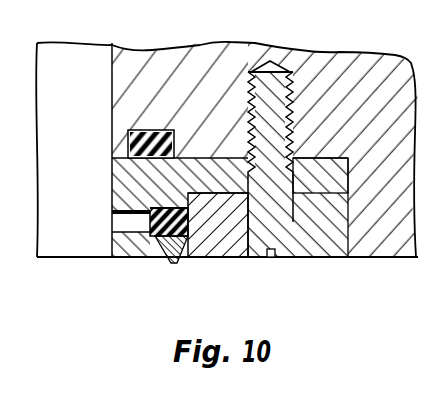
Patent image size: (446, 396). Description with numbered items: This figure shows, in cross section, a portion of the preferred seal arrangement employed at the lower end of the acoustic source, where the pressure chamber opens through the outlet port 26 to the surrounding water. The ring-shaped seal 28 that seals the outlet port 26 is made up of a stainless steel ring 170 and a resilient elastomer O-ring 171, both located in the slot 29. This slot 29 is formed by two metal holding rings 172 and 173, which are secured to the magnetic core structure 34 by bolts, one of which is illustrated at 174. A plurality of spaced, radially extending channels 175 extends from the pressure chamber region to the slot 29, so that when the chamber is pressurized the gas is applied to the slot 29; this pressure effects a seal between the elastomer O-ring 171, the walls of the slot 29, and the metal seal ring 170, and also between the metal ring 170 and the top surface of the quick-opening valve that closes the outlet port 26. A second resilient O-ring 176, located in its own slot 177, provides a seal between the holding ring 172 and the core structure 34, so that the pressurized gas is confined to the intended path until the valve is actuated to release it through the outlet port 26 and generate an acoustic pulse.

The magnetic core structure 34 is at (118, 61).
The outlet port 26 is at (63, 222).
The ring-shaped seal 28 is at (149, 258).
The slot 29 is at (186, 206).
The stainless steel ring 170 is at (174, 261).
The resilient elastomer O-ring 171 is at (169, 207).
The metal holding ring 172 is at (112, 174).
The metal holding ring 173 is at (341, 259).
The bolt 174 is at (252, 258).
The radially extending channel 175 is at (112, 226).
The resilient O-ring 176 is at (174, 138).
The slot 177 is at (172, 130).